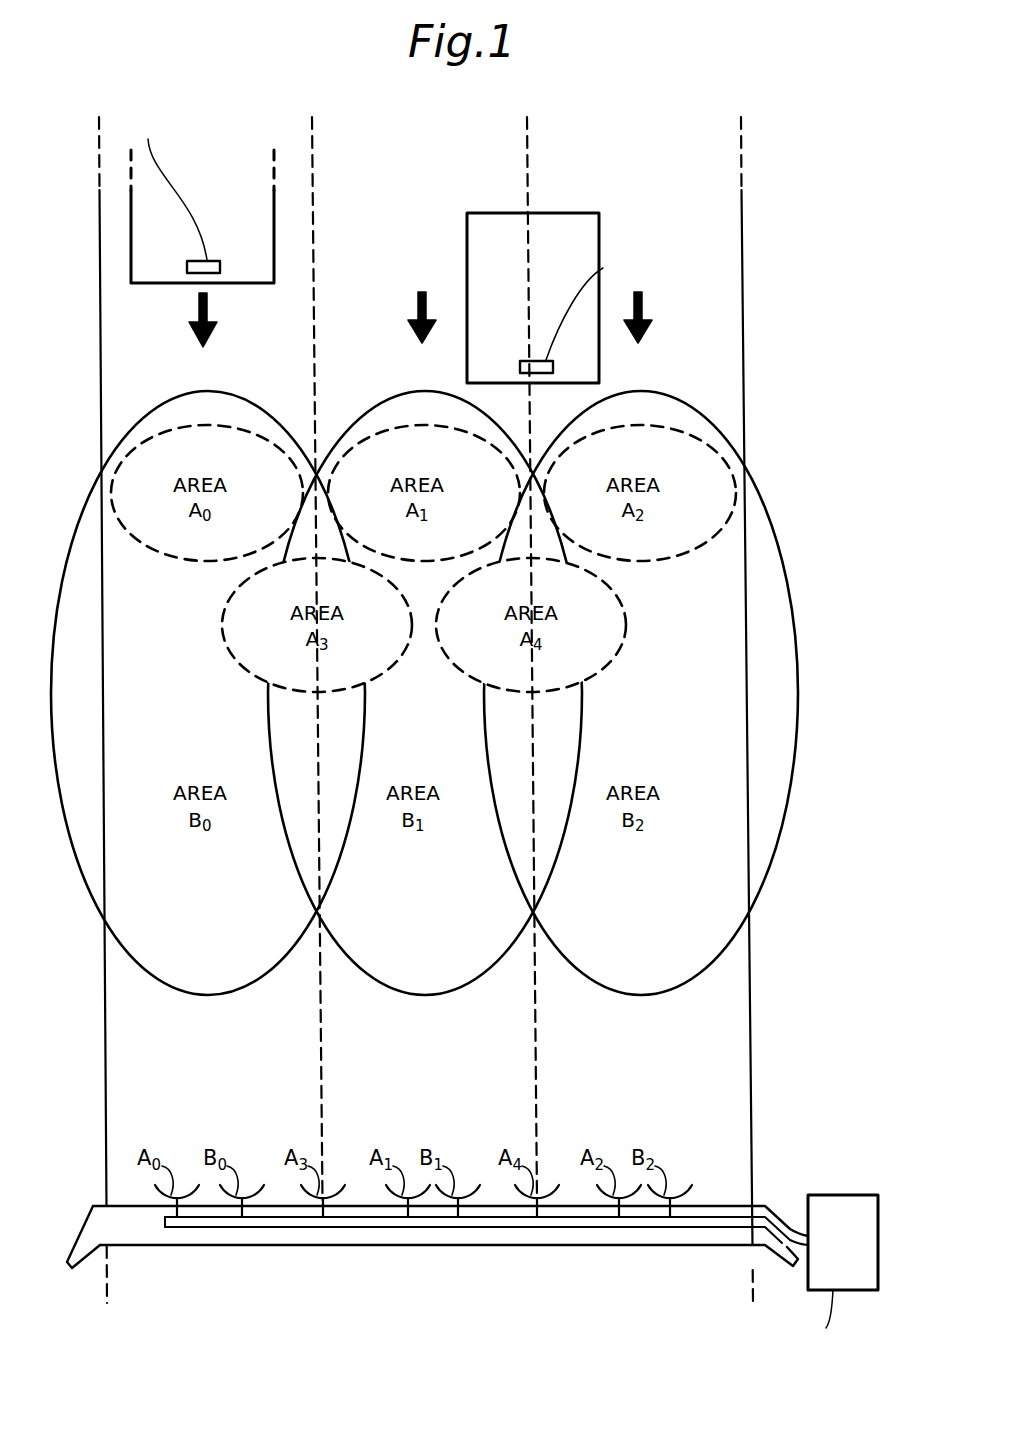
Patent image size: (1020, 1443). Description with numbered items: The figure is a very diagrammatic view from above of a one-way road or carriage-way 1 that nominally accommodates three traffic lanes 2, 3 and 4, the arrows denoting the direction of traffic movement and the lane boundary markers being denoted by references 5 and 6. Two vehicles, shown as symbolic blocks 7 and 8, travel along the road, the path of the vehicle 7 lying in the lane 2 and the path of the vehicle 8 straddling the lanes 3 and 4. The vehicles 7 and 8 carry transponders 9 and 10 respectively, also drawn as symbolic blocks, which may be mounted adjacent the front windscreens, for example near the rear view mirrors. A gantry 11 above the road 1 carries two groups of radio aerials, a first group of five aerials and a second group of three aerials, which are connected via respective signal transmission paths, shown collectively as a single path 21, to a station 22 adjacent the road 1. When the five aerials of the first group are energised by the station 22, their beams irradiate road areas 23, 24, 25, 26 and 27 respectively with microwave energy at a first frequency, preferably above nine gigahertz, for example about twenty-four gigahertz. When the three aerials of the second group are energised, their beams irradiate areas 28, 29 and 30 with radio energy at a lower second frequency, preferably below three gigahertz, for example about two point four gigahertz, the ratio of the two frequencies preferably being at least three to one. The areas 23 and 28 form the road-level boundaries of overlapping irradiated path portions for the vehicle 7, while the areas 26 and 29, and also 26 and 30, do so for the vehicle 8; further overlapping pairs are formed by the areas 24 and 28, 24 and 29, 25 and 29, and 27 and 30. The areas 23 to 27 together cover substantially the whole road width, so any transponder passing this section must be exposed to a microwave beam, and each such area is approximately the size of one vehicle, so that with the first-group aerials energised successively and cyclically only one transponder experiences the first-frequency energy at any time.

The one-way road 1 is at (742, 288).
The traffic lane 2 is at (193, 312).
The traffic lane 3 is at (413, 311).
The traffic lane 4 is at (645, 311).
The lane boundary marker 5 is at (317, 172).
The lane boundary marker 6 is at (531, 172).
The vehicle 7 is at (275, 253).
The vehicle 8 is at (467, 261).
The transponder 9 is at (191, 261).
The transponder 10 is at (528, 361).
The gantry 11 is at (96, 1232).
The signal transmission path 21 is at (238, 1229).
The station 22 is at (817, 1272).
The road area 23 is at (157, 430).
The road area 24 is at (234, 660).
The road area 25 is at (375, 430).
The road area 26 is at (455, 660).
The road area 27 is at (681, 428).
The road area 28 is at (190, 995).
The road area 29 is at (405, 995).
The road area 30 is at (628, 995).